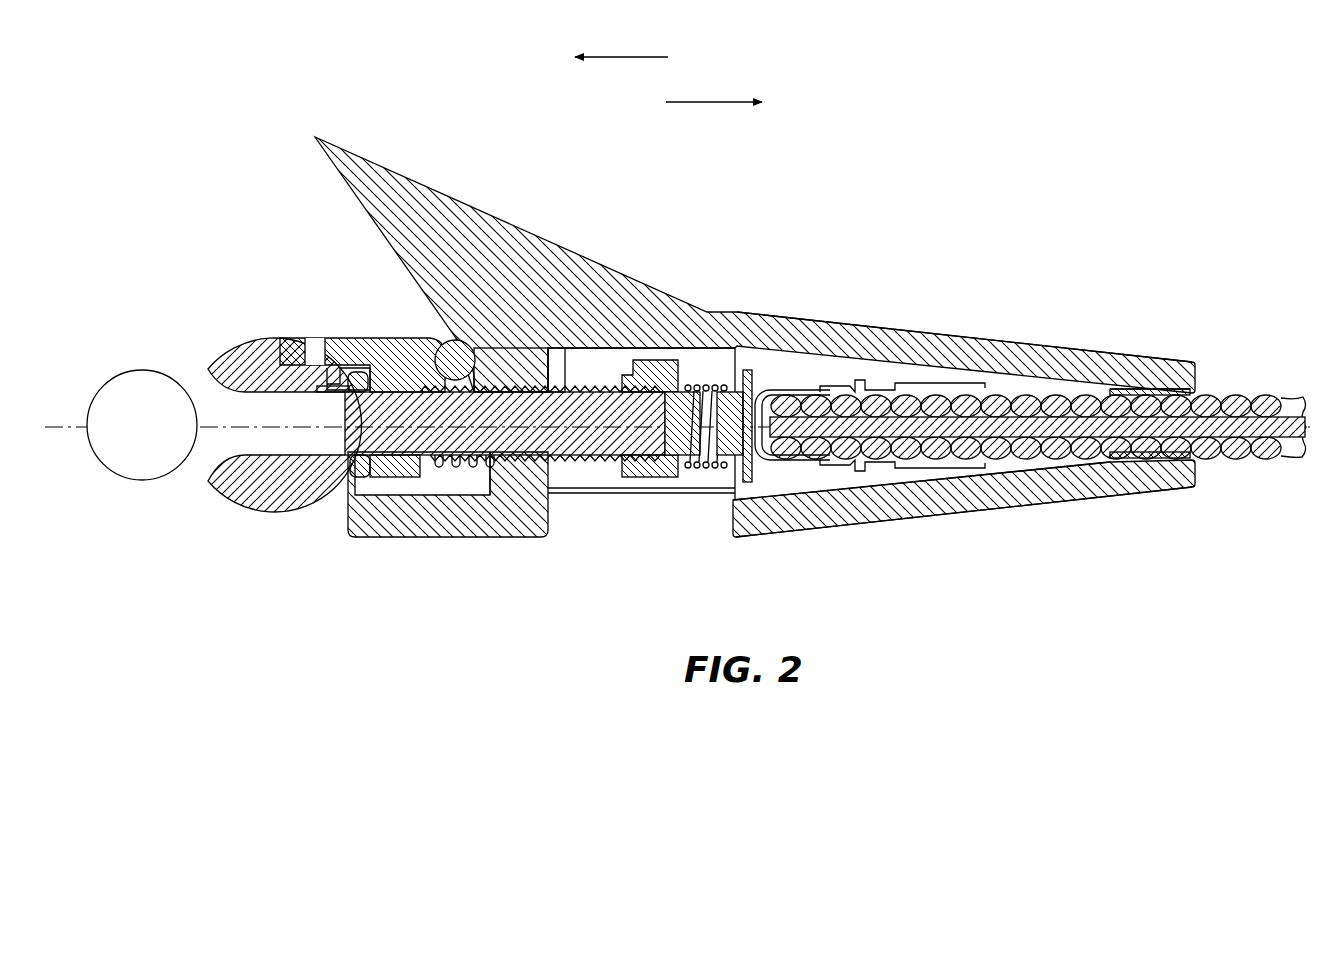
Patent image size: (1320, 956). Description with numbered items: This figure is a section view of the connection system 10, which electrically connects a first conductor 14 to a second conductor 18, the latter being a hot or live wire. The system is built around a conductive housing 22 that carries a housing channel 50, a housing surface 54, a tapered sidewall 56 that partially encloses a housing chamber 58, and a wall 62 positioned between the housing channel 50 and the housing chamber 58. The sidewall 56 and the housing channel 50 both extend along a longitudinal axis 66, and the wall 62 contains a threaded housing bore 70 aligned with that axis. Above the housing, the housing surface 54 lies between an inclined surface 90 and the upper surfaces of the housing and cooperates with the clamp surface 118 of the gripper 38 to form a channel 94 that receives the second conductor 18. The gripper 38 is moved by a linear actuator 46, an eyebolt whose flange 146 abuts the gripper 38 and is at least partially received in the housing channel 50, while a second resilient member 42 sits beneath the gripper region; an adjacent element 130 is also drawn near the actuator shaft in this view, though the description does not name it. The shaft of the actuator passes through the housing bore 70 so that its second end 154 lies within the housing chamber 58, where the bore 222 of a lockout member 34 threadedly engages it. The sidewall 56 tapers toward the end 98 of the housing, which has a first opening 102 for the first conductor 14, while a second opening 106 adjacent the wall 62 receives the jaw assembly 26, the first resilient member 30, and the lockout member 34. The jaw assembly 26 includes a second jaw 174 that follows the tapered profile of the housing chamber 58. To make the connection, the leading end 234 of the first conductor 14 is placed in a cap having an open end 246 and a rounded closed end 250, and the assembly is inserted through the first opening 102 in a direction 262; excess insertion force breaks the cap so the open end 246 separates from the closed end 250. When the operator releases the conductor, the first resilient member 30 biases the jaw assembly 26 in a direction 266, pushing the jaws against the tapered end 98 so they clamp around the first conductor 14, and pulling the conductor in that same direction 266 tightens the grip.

The connection system 10 is at (752, 188).
The first conductor 14 is at (1295, 397).
The second conductor 18 is at (455, 338).
The housing 22 is at (817, 292).
The jaw assembly 26 is at (782, 375).
The first resilient member 30 is at (695, 468).
The lockout member 34 is at (638, 477).
The gripper 38 is at (320, 340).
The second resilient member 42 is at (440, 468).
The linear actuator 46 is at (130, 325).
The housing channel 50 is at (385, 480).
The housing surface 54 is at (500, 385).
The sidewall 56 is at (862, 508).
The housing chamber 58 is at (905, 478).
The wall 62 is at (500, 520).
The longitudinal axis 66 is at (1272, 455).
The housing bore 70 is at (520, 480).
The inclined surface 90 is at (350, 187).
The channel 94 is at (440, 335).
The end 98 is at (1120, 500).
The first opening 102 is at (1185, 380).
The second opening 106 is at (700, 522).
The clamp surface 118 is at (380, 340).
The threaded rod 130 is at (340, 405).
The flange 146 is at (348, 470).
The second end 154 is at (657, 372).
The second jaw 174 is at (905, 375).
The bore 222 is at (625, 372).
The leading end 234 is at (758, 385).
The open end 246 is at (1140, 380).
The closed end 250 is at (805, 460).
The direction 262 is at (645, 54).
The direction 266 is at (693, 103).